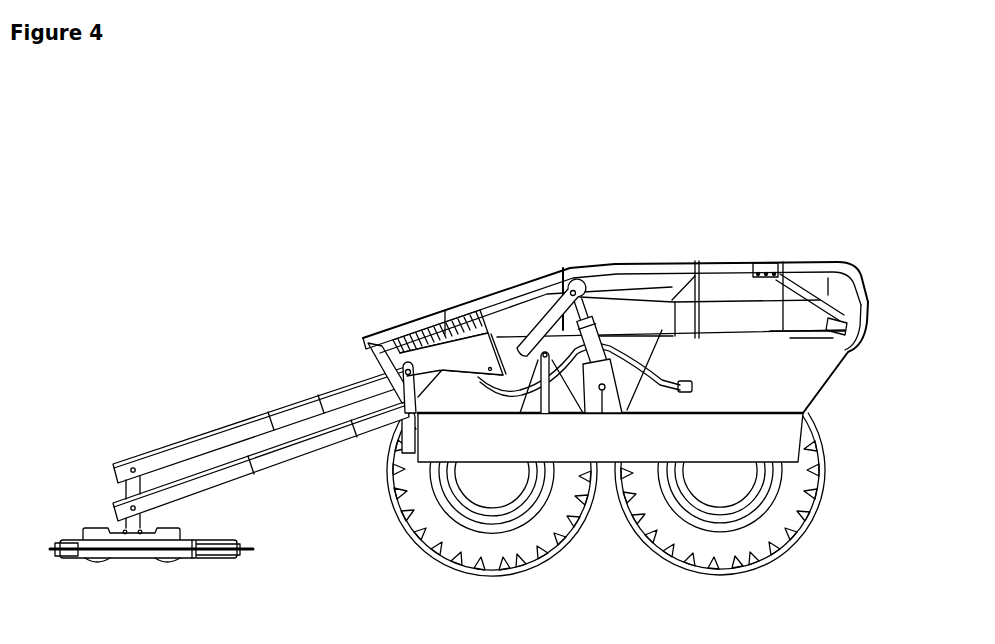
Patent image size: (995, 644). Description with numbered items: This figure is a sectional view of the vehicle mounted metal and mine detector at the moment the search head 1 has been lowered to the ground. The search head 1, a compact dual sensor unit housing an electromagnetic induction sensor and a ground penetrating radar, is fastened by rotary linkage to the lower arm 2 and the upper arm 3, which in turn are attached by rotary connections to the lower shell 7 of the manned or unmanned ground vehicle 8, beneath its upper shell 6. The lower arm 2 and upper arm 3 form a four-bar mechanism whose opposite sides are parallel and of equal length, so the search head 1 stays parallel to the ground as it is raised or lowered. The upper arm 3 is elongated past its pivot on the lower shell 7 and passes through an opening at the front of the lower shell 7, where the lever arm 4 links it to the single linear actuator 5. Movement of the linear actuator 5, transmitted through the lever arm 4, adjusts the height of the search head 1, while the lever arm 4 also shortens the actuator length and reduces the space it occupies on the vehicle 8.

The search head 1 is at (97, 532).
The lower arm 2 is at (335, 442).
The upper arm 3 is at (243, 419).
The lever arm 4 is at (510, 340).
The linear actuator 5 is at (580, 305).
The upper shell 6 is at (740, 262).
The lower shell 7 is at (822, 388).
The manned or unmanned ground vehicle 8 is at (823, 480).